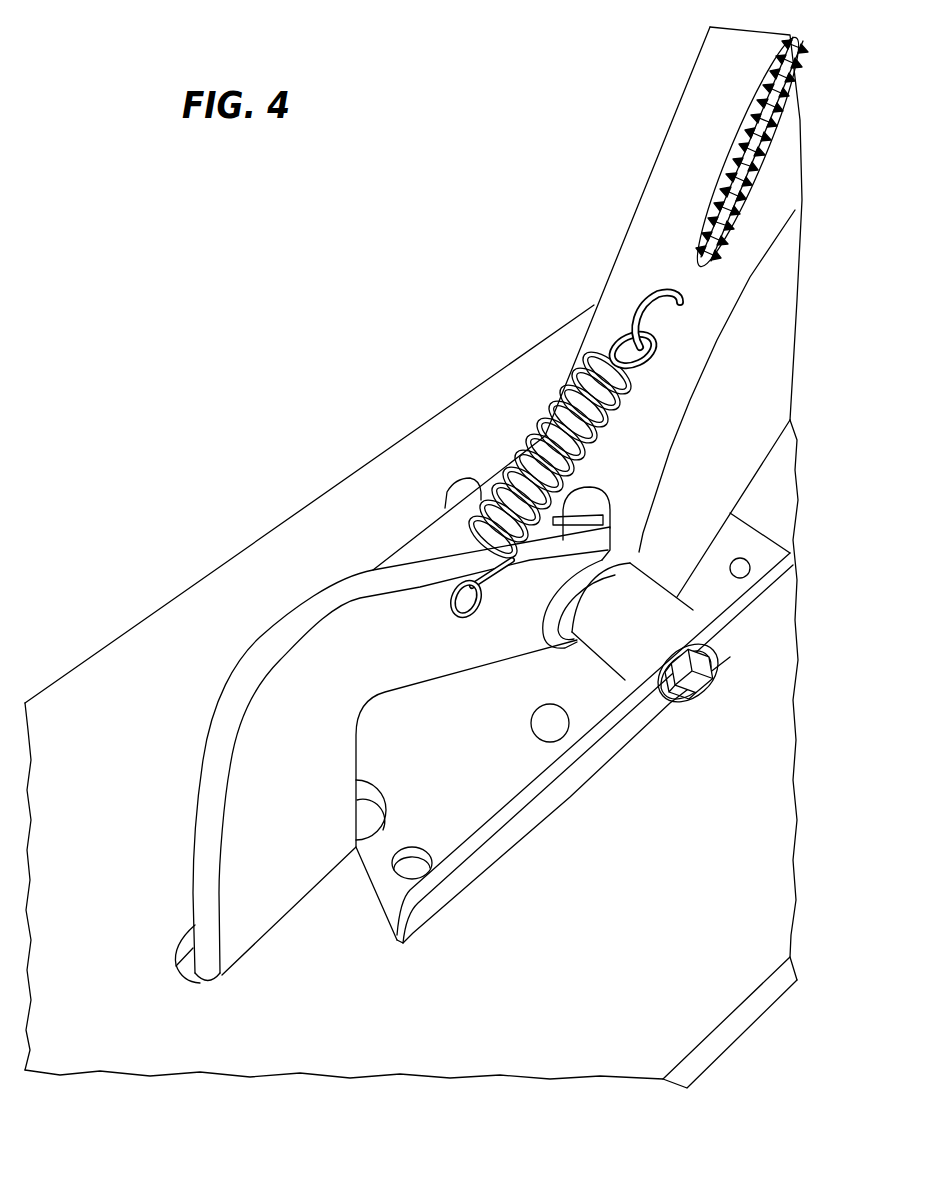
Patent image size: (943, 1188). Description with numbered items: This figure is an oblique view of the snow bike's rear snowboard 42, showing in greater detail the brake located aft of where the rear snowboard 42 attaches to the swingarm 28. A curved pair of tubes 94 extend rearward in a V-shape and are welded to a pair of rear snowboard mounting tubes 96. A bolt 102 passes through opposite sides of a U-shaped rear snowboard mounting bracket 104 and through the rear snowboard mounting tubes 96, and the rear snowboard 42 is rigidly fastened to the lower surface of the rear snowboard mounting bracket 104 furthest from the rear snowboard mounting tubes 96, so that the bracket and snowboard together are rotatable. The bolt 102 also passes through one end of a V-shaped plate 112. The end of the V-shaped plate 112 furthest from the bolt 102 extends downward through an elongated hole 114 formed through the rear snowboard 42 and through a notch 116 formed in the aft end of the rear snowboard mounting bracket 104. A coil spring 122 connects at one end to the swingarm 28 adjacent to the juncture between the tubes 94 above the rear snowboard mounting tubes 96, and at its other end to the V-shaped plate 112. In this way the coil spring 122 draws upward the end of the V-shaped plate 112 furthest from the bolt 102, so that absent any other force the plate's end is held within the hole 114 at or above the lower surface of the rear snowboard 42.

The swingarm 28 is at (613, 258).
The rear snowboard 42 is at (232, 559).
The tubes 94 is at (683, 92).
The rear snowboard mounting tubes 96 is at (592, 653).
The bolt 102 is at (713, 686).
The rear snowboard mounting bracket 104 is at (399, 807).
The V-shaped plate 112 is at (360, 592).
The elongated hole 114 is at (210, 973).
The notch 116 is at (388, 804).
The coil spring 122 is at (538, 436).